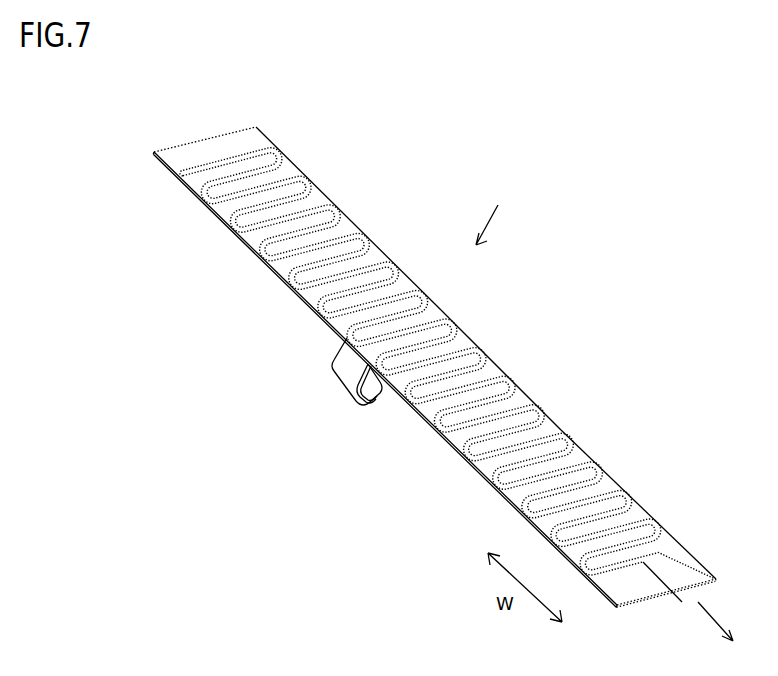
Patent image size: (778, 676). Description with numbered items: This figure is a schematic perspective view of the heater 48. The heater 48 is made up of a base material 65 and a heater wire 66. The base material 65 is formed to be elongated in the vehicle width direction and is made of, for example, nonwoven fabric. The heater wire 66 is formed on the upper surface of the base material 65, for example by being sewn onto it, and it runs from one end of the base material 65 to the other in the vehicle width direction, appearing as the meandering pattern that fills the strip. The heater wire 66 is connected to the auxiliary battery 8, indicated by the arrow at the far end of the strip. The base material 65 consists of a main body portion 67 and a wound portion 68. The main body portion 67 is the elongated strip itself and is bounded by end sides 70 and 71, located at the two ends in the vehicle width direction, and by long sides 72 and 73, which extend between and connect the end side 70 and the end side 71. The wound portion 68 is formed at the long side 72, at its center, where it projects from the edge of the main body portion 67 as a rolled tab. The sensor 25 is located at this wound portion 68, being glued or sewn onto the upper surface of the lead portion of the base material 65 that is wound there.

The auxiliary battery 8 is at (696, 611).
The sensor 25 is at (372, 412).
The heater 48 is at (494, 214).
The base material 65 is at (360, 240).
The heater wire 66 is at (407, 280).
The main body portion 67 is at (470, 345).
The wound portion 68 is at (335, 378).
The end side 70 is at (638, 604).
The end side 71 is at (202, 140).
The long side 72 is at (520, 508).
The long side 73 is at (593, 460).